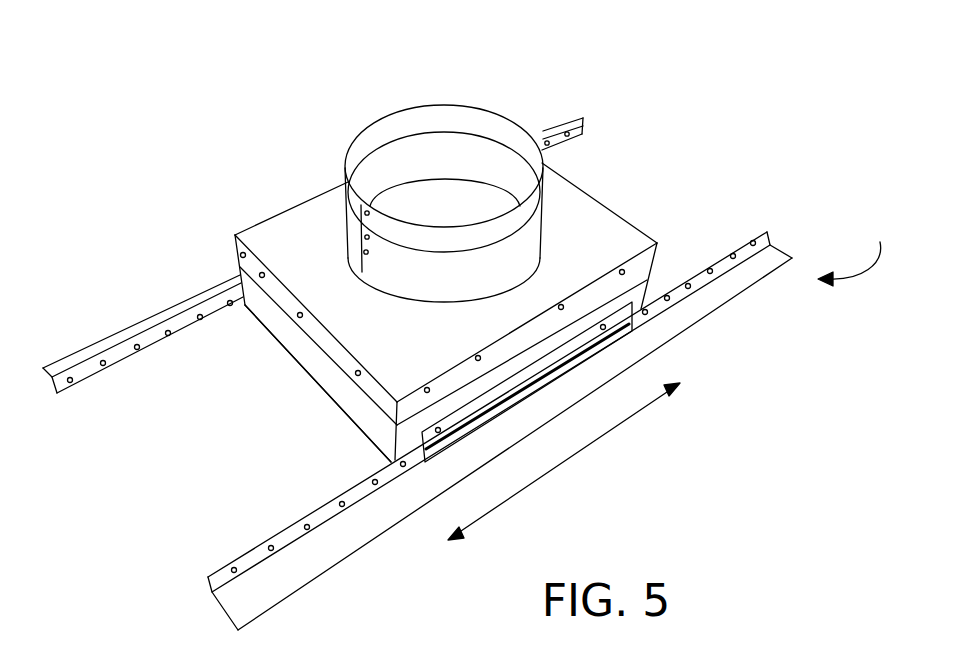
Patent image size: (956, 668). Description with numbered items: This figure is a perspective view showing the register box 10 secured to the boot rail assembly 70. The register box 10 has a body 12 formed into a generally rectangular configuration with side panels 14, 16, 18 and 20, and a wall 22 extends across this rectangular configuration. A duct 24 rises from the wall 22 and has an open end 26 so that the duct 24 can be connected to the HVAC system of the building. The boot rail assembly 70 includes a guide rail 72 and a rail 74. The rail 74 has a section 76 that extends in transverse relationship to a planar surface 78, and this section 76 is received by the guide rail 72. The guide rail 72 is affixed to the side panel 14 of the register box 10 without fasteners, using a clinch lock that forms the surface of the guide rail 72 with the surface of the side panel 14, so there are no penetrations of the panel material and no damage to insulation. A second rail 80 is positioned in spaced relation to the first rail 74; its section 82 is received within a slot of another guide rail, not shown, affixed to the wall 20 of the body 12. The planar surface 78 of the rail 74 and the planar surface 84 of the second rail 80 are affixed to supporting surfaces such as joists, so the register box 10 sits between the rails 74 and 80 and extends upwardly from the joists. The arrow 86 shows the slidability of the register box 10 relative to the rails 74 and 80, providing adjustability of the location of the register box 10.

The register box 10 is at (605, 200).
The body 12 is at (573, 179).
The side panel 14 is at (643, 308).
The side panel 16 is at (640, 223).
The side panel 18 is at (323, 380).
The side panel 20 is at (243, 226).
The wall 22 is at (298, 223).
The duct 24 is at (423, 104).
The open end 26 is at (468, 152).
The boot rail assembly 70 is at (859, 252).
The guide rail 72 is at (617, 332).
The rail 74 is at (773, 258).
The section 76 is at (767, 232).
The planar surface 78 is at (297, 578).
The second rail 80 is at (148, 318).
The section 82 is at (148, 345).
The planar surface 84 is at (63, 357).
The arrow 86 is at (590, 447).